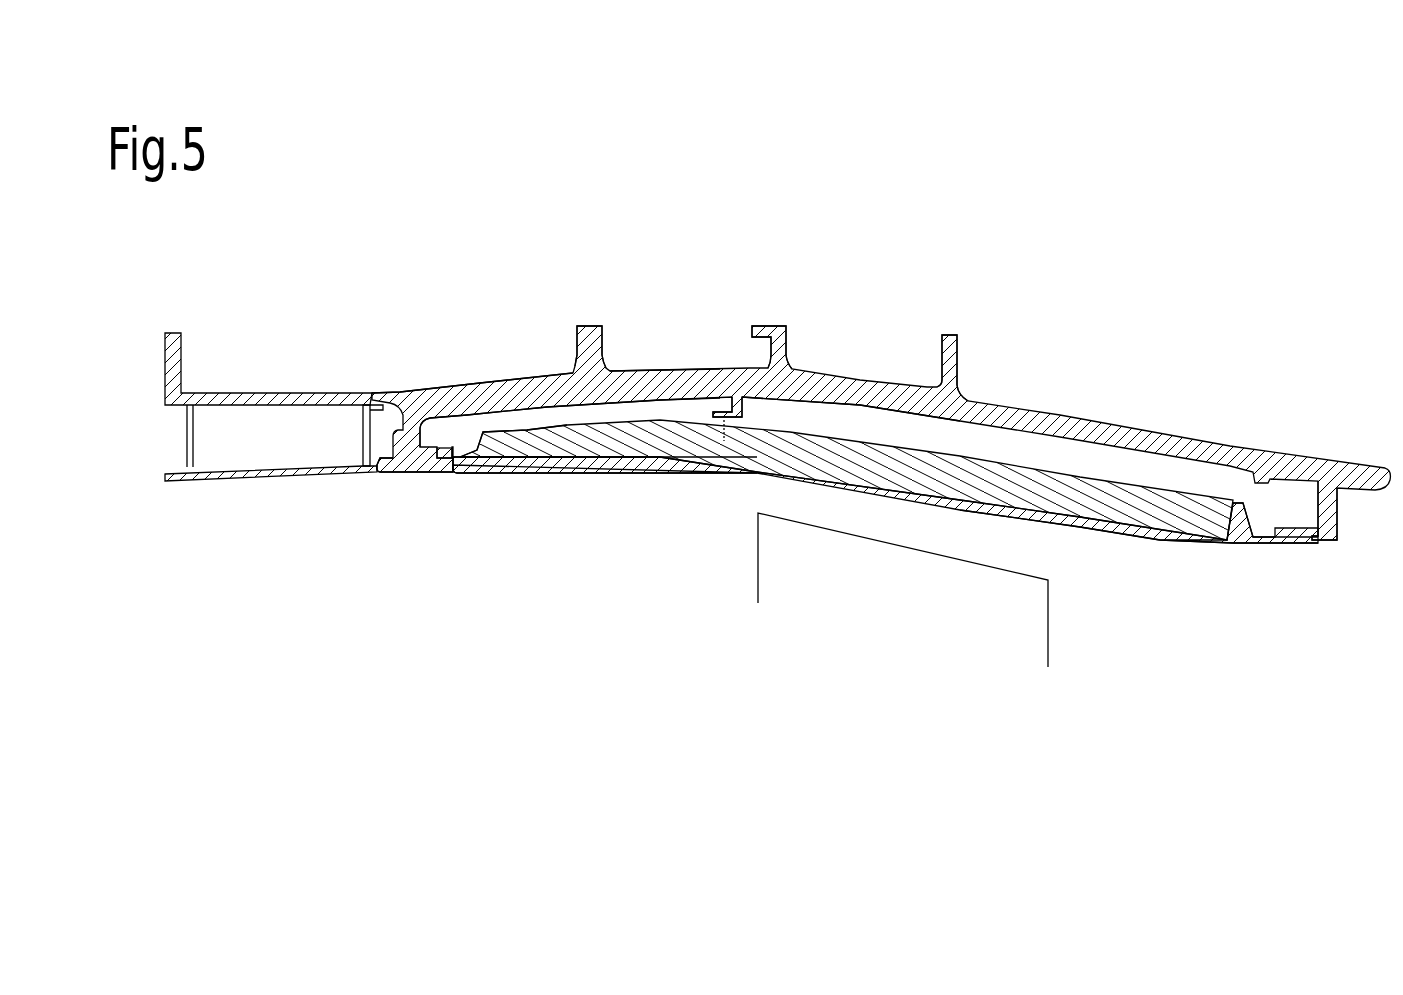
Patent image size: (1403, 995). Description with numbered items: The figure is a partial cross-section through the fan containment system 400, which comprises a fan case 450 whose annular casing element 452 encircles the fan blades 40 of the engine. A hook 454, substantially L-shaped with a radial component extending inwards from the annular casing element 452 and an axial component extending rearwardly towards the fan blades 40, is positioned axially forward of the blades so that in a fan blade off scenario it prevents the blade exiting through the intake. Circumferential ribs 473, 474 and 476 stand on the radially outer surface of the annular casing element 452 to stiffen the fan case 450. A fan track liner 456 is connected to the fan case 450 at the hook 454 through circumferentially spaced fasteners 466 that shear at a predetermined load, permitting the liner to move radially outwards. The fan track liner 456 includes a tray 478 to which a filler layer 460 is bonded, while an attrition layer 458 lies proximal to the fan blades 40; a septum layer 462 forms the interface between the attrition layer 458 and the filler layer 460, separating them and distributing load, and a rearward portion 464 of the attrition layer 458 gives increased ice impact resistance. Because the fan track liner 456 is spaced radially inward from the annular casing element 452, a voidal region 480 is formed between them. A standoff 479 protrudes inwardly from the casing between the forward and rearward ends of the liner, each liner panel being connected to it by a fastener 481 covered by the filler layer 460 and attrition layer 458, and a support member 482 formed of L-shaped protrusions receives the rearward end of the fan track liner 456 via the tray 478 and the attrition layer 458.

The fan containment system 400 is at (346, 291).
The fan case 450 is at (1139, 411).
The annular casing element 452 is at (470, 397).
The hook 454 is at (402, 463).
The fan track liner 456 is at (1062, 548).
The attrition layer 458 is at (693, 467).
The filler layer 460 is at (640, 443).
The septum layer 462 is at (808, 468).
The rearward portion 464 is at (1197, 540).
The fasteners 466 is at (440, 453).
The circumferential rib 473 is at (589, 350).
The circumferential rib 474 is at (773, 325).
The circumferential rib 476 is at (957, 343).
The tray 478 is at (522, 437).
The standoff 479 is at (737, 403).
The voidal region 480 is at (903, 430).
The fastener 481 is at (735, 433).
The support member 482 is at (1337, 518).
The fan blades 40 is at (1048, 637).